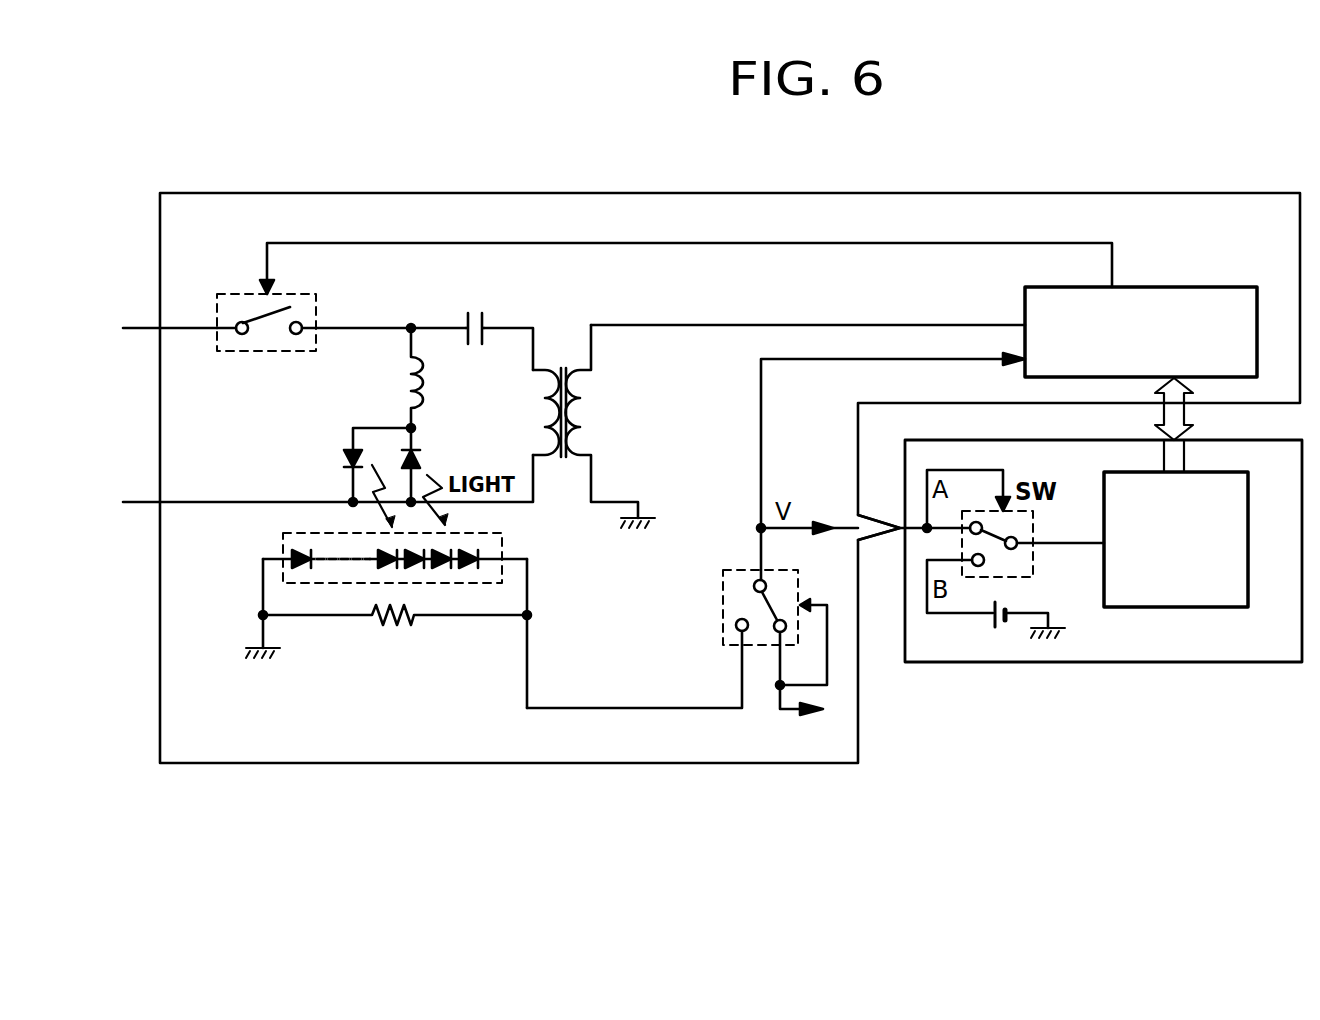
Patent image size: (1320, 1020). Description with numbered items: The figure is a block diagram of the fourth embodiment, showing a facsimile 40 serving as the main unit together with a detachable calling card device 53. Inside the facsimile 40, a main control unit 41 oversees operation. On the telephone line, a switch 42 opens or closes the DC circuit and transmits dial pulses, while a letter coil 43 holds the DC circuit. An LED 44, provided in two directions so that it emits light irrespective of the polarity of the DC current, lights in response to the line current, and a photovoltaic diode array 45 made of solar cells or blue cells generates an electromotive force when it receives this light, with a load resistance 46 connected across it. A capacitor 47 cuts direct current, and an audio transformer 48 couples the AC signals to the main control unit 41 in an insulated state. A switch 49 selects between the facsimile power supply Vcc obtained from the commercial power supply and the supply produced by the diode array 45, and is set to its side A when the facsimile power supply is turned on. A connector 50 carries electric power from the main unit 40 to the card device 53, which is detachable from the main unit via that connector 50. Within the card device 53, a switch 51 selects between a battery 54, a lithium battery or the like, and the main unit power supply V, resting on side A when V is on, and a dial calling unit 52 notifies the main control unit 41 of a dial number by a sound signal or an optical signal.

The facsimile 40 is at (453, 193).
The main control unit 41 is at (1182, 285).
The switch 42 is at (222, 293).
The letter coil 43 is at (433, 388).
The LED 44 is at (340, 460).
The photovoltaic diode array 45 is at (283, 545).
The load resistance 46 is at (395, 627).
The capacitor 47 is at (478, 303).
The audio transformer 48 is at (583, 413).
The switch 49 is at (722, 610).
The connector 50 is at (877, 540).
The switch 51 is at (1033, 558).
The dial calling unit 52 is at (1165, 607).
The detachable calling card device 53 is at (1160, 662).
The battery 54 is at (987, 620).